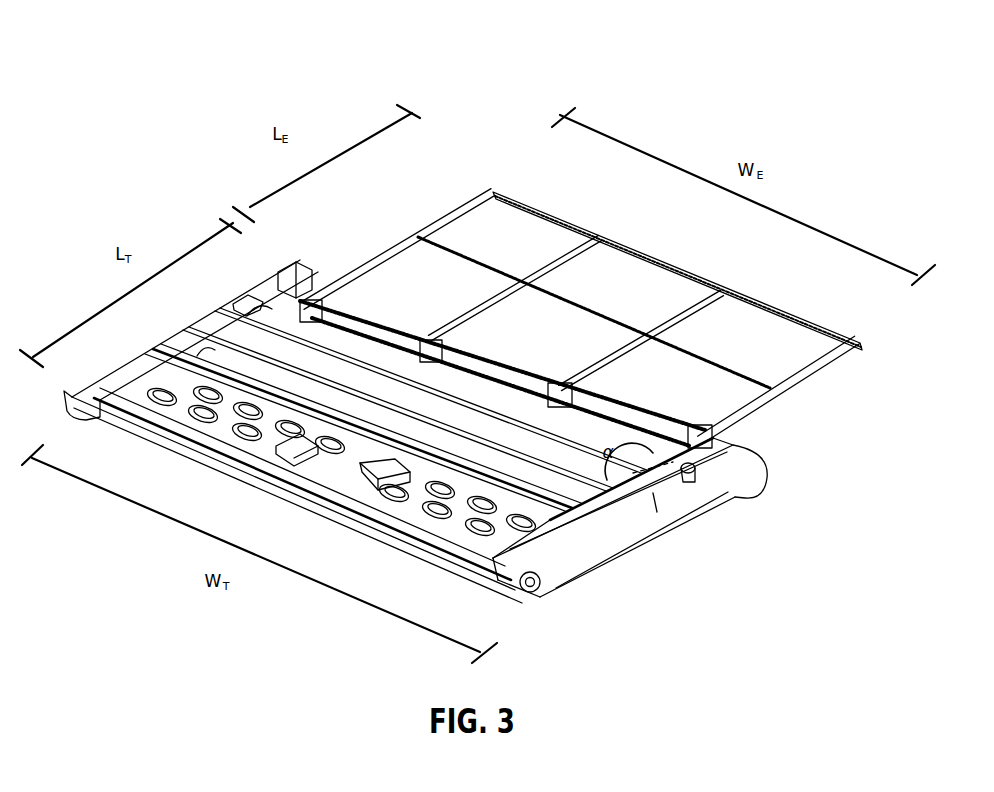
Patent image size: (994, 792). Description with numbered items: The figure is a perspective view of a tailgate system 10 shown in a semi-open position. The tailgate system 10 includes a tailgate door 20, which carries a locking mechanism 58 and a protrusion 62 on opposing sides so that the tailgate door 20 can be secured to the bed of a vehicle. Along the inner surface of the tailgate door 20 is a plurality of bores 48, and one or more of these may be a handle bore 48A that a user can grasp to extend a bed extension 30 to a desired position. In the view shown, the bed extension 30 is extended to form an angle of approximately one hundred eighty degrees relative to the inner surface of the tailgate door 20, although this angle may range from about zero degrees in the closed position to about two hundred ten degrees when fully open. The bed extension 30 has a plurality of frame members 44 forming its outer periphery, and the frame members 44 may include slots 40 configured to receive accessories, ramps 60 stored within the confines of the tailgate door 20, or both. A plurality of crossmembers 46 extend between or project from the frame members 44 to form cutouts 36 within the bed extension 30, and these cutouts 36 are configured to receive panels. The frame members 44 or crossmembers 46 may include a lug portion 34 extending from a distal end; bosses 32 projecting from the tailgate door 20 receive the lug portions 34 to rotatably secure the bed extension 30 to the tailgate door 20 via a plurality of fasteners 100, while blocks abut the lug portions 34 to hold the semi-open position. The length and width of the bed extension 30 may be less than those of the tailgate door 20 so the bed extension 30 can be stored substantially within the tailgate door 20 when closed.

The tailgate system 10 is at (478, 80).
The tailgate door 20 is at (660, 520).
The bed extension 30 is at (710, 272).
The bosses 32 is at (312, 318).
The lug portion 34 is at (322, 290).
The cutouts 36 is at (398, 272).
The slots 40 is at (522, 198).
The frame members 44 is at (402, 246).
The crossmembers 46 is at (402, 306).
The bores 48 is at (197, 425).
The handle bore 48A is at (290, 452).
The locking mechanism 58 is at (690, 487).
The ramps 60 is at (240, 334).
The protrusion 62 is at (535, 592).
The fasteners 100 is at (298, 274).